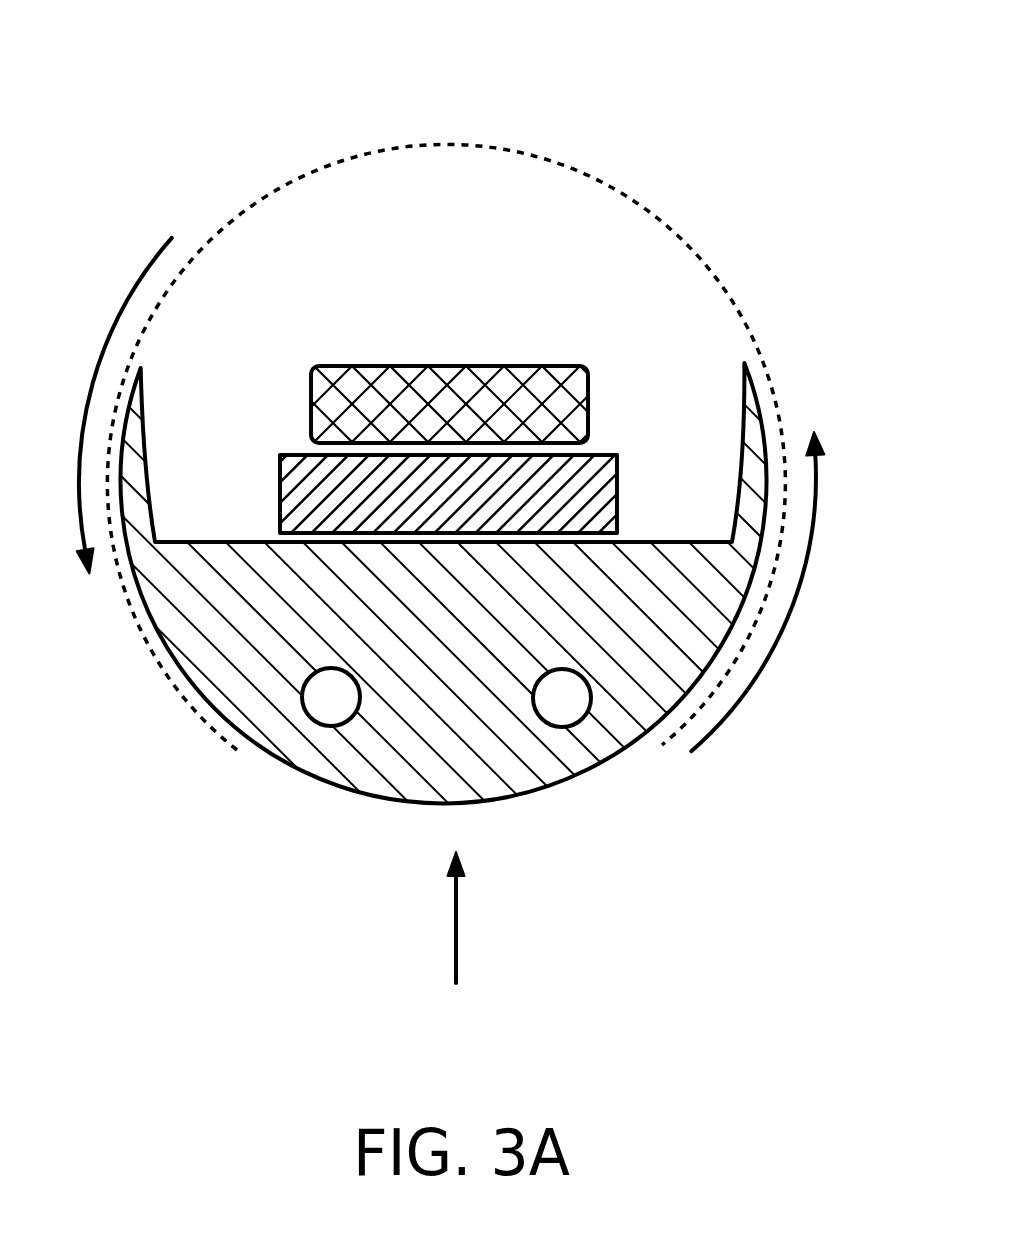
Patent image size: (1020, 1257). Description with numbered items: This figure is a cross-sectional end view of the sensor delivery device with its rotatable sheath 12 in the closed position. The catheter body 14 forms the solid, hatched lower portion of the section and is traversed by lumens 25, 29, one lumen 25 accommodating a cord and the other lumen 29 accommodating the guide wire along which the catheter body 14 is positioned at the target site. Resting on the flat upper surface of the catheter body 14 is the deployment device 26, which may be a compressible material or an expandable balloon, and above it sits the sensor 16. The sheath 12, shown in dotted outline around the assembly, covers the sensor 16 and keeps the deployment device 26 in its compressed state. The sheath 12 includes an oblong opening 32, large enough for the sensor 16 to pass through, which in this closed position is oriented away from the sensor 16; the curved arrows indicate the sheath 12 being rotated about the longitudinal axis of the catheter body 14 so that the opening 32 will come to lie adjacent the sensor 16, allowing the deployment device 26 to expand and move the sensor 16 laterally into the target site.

The sheath 12 is at (483, 148).
The catheter body 14 is at (257, 635).
The sensor 16 is at (590, 402).
The deployment device 26 is at (617, 492).
The lumen 25 is at (325, 725).
The lumen 29 is at (567, 726).
The opening 32 is at (459, 946).